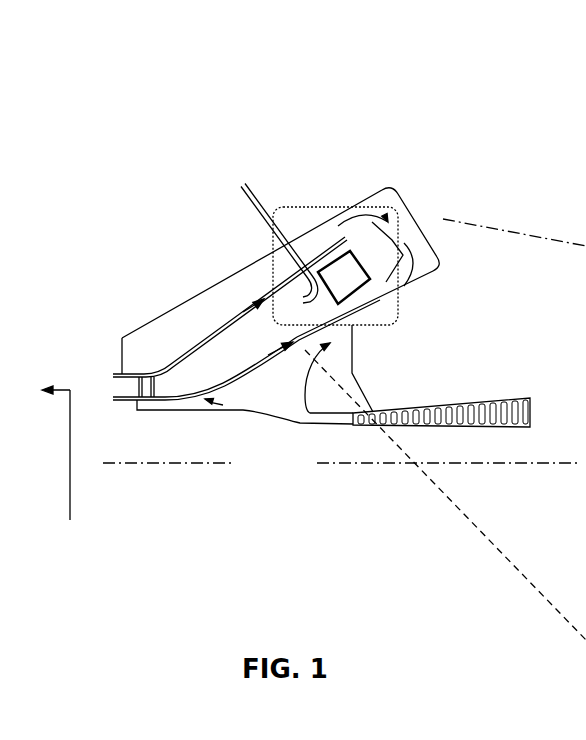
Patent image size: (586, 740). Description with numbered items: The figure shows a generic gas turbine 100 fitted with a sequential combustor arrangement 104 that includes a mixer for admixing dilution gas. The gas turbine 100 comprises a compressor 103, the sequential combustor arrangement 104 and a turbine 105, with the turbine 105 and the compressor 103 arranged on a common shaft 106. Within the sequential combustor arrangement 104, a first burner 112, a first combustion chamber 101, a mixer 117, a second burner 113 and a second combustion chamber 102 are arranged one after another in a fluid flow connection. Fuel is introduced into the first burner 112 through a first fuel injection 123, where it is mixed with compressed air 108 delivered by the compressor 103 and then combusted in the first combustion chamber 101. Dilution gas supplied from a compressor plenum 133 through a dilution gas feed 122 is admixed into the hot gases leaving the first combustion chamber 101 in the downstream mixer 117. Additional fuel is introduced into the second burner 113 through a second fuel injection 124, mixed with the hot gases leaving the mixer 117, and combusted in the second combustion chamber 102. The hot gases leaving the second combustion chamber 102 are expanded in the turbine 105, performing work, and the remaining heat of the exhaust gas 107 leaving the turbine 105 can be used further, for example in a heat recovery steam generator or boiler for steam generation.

The gas turbine 100 is at (216, 172).
The first combustion chamber 101 is at (365, 258).
The second combustion chamber 102 is at (227, 348).
The compressor 103 is at (482, 428).
The sequential combustor arrangement 104 is at (437, 236).
The turbine 105 is at (140, 430).
The shaft 106 is at (258, 476).
The exhaust gas 107 is at (67, 471).
The compressed air 108 is at (325, 418).
The first burner 112 is at (380, 243).
The second burner 113 is at (297, 313).
The mixer 117 is at (388, 297).
The dilution gas feed 122 is at (182, 350).
The first fuel injection 123 is at (432, 212).
The second fuel injection 124 is at (259, 195).
The compressor plenum 133 is at (140, 350).